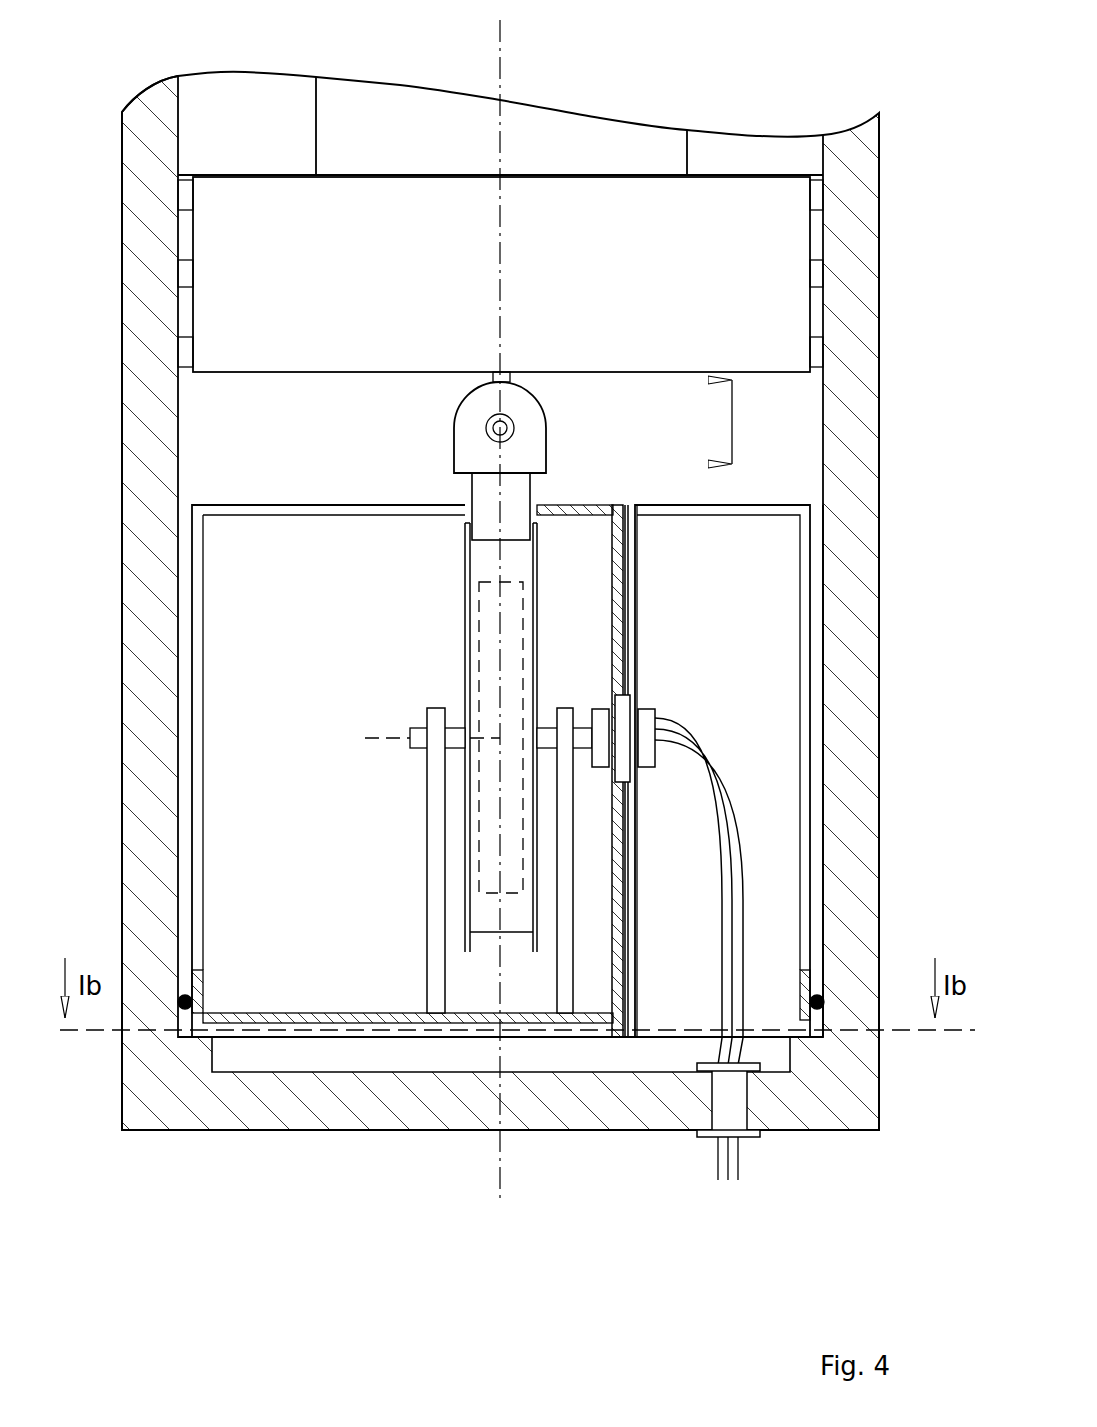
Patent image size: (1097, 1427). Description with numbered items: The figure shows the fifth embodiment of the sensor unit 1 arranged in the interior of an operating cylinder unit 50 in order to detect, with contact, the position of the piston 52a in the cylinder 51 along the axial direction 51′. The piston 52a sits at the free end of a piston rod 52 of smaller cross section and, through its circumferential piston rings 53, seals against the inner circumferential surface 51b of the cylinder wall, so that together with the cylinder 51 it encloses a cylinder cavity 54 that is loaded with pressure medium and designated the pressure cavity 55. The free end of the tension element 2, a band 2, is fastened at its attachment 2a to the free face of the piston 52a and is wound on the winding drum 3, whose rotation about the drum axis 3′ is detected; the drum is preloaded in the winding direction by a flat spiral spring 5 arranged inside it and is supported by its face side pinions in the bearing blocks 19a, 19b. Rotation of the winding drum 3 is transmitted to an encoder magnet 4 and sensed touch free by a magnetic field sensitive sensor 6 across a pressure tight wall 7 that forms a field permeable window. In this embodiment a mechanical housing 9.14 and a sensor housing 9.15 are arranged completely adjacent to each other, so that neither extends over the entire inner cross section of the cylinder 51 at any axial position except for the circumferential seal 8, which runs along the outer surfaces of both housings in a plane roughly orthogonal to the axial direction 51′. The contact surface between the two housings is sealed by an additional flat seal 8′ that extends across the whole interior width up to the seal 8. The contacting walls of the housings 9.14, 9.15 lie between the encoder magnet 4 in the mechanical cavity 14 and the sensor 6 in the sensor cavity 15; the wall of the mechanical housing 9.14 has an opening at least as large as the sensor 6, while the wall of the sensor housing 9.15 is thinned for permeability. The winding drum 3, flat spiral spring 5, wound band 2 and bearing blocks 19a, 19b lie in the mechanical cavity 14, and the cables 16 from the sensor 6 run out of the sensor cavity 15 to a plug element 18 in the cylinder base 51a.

The sensor unit 1 is at (268, 483).
The tension element 2 is at (501, 506).
The pivot joint 2a is at (515, 428).
The winding drum 3 is at (465, 570).
The cylinder axis / crosshead plane 3′ is at (372, 735).
The encoder magnet 4 is at (600, 718).
The flat spiral spring 5 is at (479, 632).
The sensor 6 is at (650, 716).
The pressure tight wall 7 is at (628, 695).
The circumferential seal 8 is at (180, 1003).
The additional seal 8′ is at (627, 525).
The mechanical housing 9.14 is at (200, 685).
The sensor housing 9.15 is at (630, 942).
The mechanical cavity 14 is at (328, 771).
The sensor cavity 15 is at (722, 771).
The cables 16 is at (722, 812).
The plug element 18 is at (727, 1092).
The bearing block 19a is at (440, 872).
The bearing block 19b is at (565, 952).
The operating cylinder unit 50 is at (852, 77).
The cylinder 51 is at (848, 712).
The axial direction 51′ is at (502, 278).
The cylinder base 51a is at (330, 1132).
The inner circumferential surface 51b is at (826, 770).
The piston rod 52 is at (318, 140).
The piston 52a is at (501, 274).
The piston rings 53 is at (815, 347).
The cylinder cavity 54 is at (768, 422).
The pressure cavity 55 is at (245, 123).